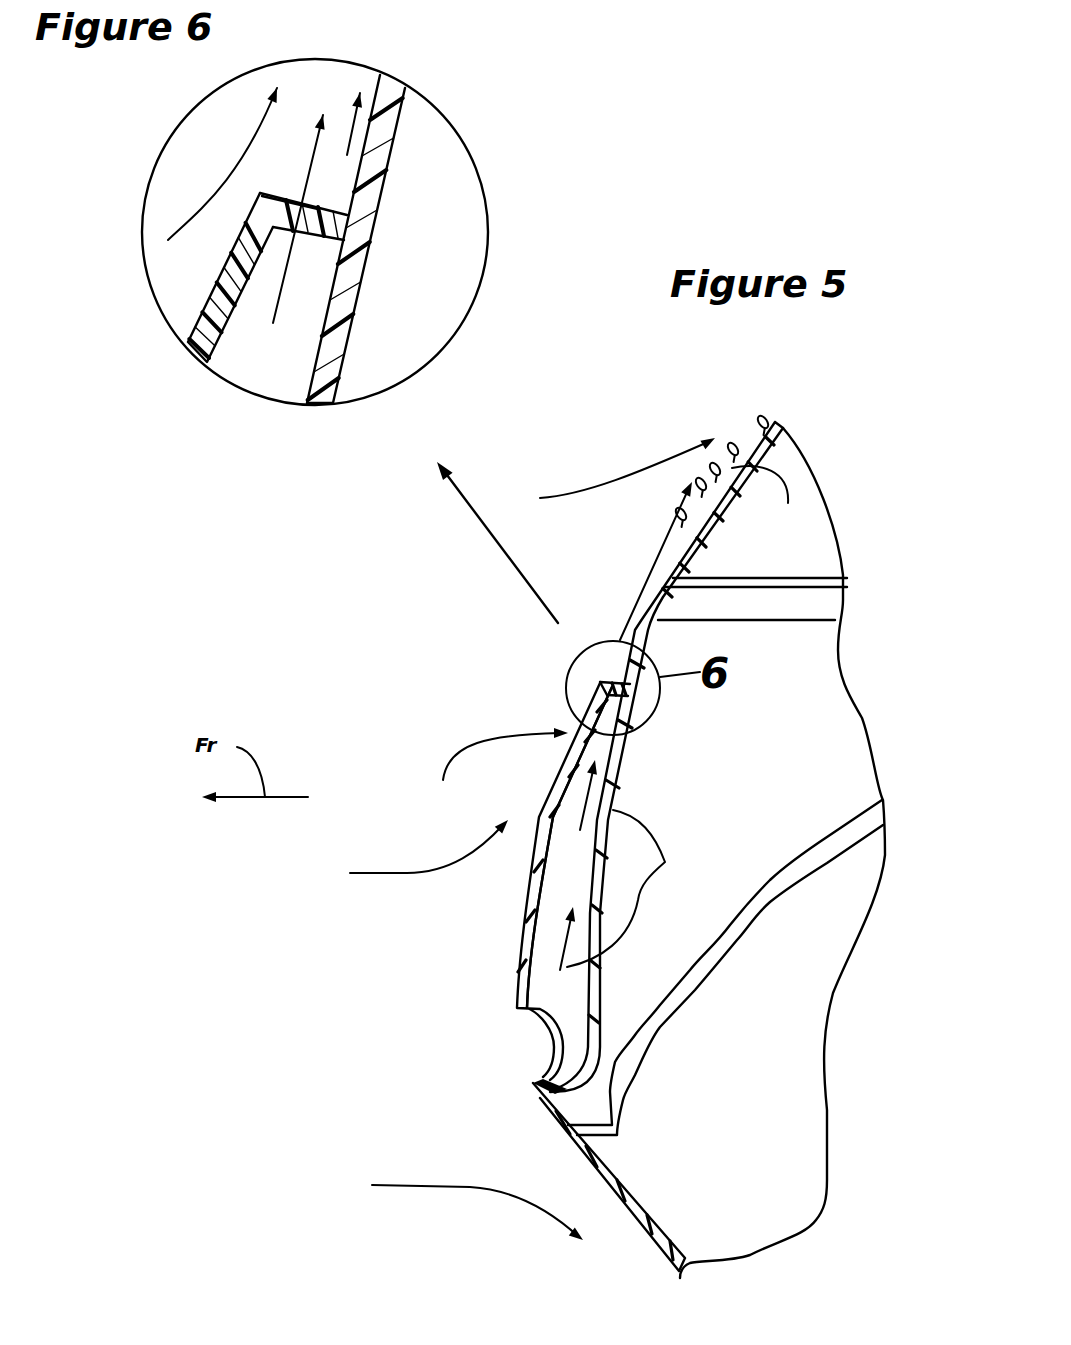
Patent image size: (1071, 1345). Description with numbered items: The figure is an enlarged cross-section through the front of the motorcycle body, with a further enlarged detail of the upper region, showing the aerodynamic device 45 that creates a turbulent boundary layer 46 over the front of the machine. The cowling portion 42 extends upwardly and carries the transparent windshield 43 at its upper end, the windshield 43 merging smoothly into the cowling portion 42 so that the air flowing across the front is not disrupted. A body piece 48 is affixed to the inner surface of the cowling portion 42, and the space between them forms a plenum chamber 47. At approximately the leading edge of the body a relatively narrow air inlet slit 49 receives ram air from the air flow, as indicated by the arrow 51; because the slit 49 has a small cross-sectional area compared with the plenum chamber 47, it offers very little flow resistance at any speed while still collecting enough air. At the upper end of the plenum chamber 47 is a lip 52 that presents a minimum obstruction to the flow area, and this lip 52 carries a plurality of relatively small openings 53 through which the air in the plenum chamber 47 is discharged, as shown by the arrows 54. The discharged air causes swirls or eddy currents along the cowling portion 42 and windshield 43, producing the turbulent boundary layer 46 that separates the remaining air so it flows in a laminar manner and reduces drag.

In FIG. 5, the cowling portion 42 is at (543, 818).
In FIG. 5, the windshield 43 is at (751, 435).
In FIG. 6, the aerodynamic device 45 is at (196, 309).
In FIG. 5, the aerodynamic device 45 is at (495, 770).
In FIG. 5, the turbulent boundary layer 46 is at (428, 1203).
In FIG. 6, the plenum chamber 47 is at (270, 380).
In FIG. 5, the plenum chamber 47 is at (543, 912).
In FIG. 6, the body piece 48 is at (330, 378).
In FIG. 5, the body piece 48 is at (617, 790).
In FIG. 5, the air inlet slit 49 is at (545, 1082).
In FIG. 5, the arrow 51 is at (428, 1042).
In FIG. 6, the lip 52 is at (330, 236).
In FIG. 5, the lip 52 is at (610, 680).
In FIG. 6, the openings 53 is at (315, 203).
In FIG. 6, the arrows 54 is at (350, 115).
In FIG. 5, the arrows 54 is at (675, 517).